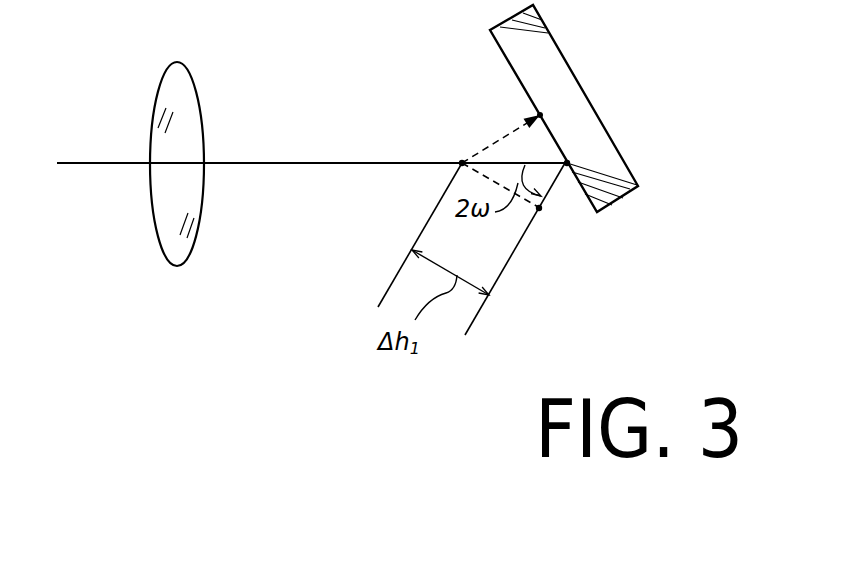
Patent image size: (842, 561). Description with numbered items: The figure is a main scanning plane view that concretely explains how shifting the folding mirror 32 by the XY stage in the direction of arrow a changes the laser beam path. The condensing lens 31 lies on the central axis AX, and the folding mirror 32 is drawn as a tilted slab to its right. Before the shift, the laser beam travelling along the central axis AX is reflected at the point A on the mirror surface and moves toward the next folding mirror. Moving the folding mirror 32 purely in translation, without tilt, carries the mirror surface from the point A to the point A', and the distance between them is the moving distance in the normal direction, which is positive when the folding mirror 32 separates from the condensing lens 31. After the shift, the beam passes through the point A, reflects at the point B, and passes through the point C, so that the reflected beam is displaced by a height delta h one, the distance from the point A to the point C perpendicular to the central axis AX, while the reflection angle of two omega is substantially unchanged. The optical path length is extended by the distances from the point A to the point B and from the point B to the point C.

The condensing lens 31 is at (157, 105).
The folding mirror 32 is at (578, 83).
The central axis AX is at (312, 162).
The point A is at (421, 201).
The point A' is at (502, 115).
The point B is at (567, 166).
The point C is at (540, 210).